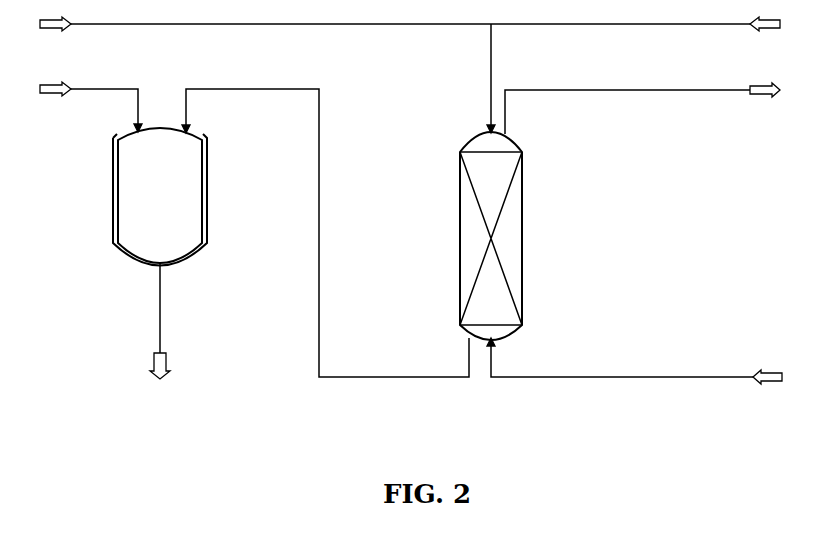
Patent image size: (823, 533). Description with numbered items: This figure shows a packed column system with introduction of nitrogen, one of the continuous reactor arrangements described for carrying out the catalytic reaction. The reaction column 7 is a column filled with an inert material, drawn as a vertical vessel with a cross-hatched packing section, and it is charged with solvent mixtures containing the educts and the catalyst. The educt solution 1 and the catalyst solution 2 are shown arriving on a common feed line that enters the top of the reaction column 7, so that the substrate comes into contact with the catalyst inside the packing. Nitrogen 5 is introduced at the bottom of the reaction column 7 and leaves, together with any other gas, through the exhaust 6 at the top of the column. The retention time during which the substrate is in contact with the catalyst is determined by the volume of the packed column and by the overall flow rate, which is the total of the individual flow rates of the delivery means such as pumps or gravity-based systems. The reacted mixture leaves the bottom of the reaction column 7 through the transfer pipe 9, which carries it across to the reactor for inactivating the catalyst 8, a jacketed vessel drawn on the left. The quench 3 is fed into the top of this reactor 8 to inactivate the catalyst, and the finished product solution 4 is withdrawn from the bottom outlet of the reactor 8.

The educt solution 1 is at (641, 75).
The catalyst solution 2 is at (257, 24).
The quench 3 is at (83, 107).
The product solution 4 is at (160, 333).
The nitrogen 5 is at (643, 361).
The exhaust 6 is at (651, 108).
The reaction column 7 is at (477, 236).
The reactor for inactivating the catalyst 8 is at (160, 197).
The transfer pipe 9 is at (325, 244).